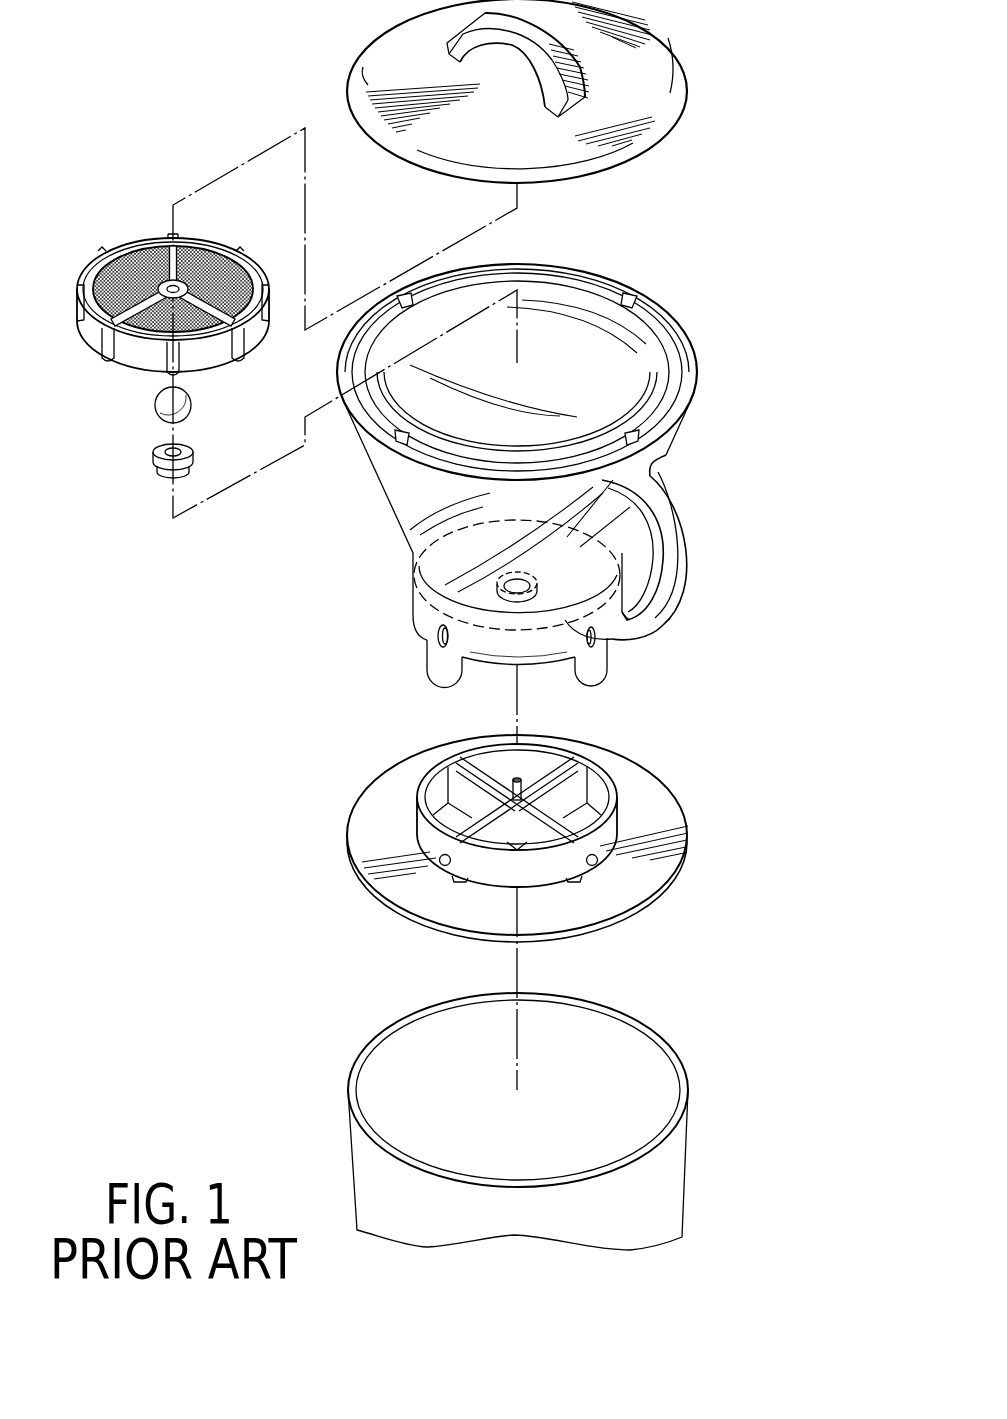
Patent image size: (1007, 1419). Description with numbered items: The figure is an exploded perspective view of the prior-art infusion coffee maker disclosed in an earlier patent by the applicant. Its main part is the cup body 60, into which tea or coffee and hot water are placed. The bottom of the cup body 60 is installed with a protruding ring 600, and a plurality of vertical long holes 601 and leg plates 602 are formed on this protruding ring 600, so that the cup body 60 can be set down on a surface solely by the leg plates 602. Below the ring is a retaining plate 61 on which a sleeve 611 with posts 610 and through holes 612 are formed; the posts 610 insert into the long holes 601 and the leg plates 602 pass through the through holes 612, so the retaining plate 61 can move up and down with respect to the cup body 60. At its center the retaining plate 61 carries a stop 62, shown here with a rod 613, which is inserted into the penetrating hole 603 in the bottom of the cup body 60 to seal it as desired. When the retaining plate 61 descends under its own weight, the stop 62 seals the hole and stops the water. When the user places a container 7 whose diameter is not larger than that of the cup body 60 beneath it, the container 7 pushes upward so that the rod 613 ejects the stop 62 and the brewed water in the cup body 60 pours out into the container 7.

The cup body 60 is at (640, 347).
The stop 62 is at (155, 405).
The protruding ring 600 is at (532, 650).
The vertical long holes 601 is at (438, 634).
The leg plates 602 is at (440, 662).
The drain hole 603 is at (495, 580).
The retaining plate 61 is at (710, 823).
The posts 610 is at (440, 865).
The sleeve 611 is at (425, 833).
The through holes 612 is at (450, 883).
The rod 613 is at (513, 785).
The container 7 is at (623, 1098).